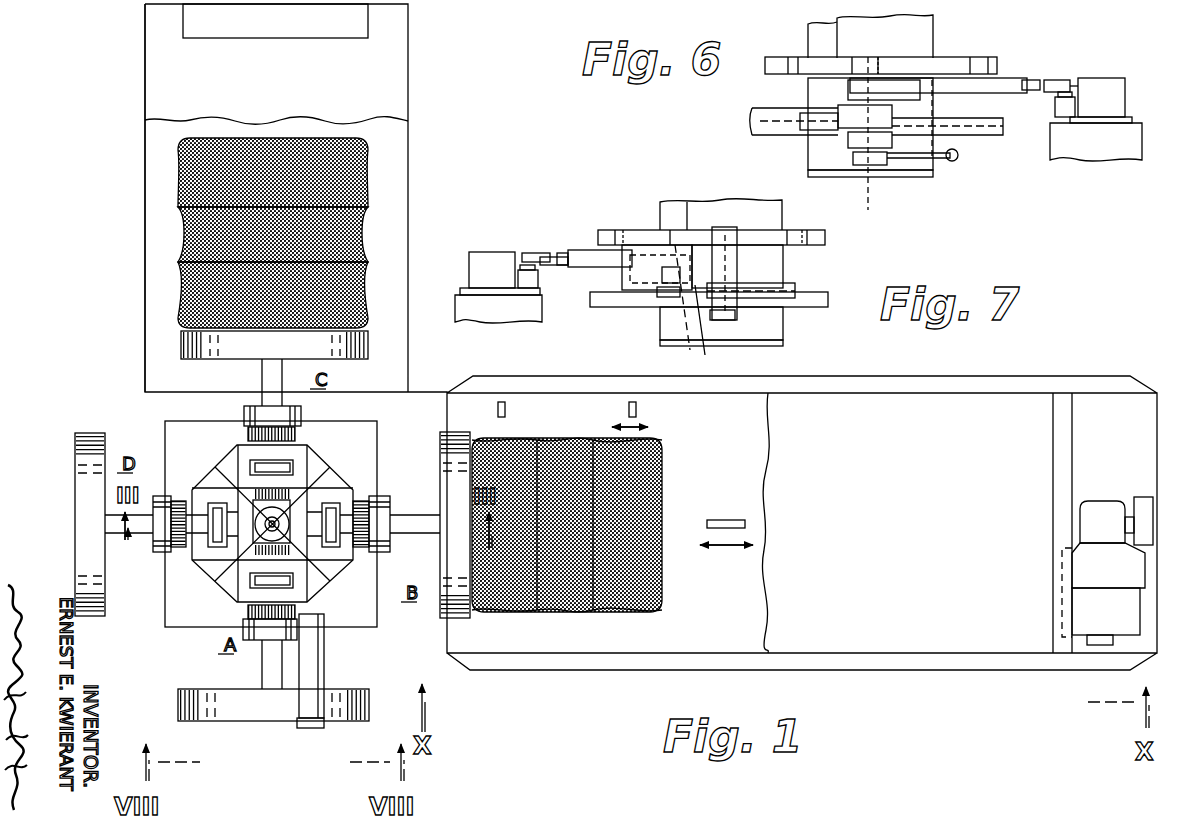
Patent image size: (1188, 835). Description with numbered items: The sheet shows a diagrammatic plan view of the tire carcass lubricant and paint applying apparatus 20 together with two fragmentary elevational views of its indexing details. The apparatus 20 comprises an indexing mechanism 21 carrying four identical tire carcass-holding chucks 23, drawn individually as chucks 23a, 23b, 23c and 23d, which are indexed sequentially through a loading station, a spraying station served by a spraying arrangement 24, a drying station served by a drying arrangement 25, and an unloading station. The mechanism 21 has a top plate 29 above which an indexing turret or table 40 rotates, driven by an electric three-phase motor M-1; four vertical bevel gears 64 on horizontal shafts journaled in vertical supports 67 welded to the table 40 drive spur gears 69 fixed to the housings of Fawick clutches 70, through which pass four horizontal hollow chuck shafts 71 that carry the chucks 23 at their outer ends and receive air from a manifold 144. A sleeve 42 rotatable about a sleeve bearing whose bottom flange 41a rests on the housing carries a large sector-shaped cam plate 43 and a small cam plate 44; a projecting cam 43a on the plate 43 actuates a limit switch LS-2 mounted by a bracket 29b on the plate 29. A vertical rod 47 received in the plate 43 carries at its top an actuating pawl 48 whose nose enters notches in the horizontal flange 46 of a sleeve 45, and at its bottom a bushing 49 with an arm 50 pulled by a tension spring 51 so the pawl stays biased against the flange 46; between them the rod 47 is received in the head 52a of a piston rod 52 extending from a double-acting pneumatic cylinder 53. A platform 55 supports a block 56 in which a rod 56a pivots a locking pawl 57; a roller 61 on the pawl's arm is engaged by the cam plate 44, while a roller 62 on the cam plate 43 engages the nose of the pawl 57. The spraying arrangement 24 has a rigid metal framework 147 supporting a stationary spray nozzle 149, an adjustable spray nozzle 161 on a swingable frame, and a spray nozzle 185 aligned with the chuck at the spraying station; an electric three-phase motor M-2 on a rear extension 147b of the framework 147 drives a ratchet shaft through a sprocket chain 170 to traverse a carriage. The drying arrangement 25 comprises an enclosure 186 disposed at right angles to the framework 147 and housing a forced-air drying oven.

In FIG. 1, the lubricant and paint applying apparatus 20 is at (540, 684).
In FIG. 1, the indexing mechanism 21 is at (163, 617).
In FIG. 1, the tire carcass-holding chucks 23 is at (178, 346).
In FIG. 1, the drive hub 23a is at (200, 702).
In FIG. 1, the drive hub 23b is at (462, 620).
In FIG. 1, the cylindrical article holder 23c is at (370, 347).
In FIG. 1, the drive hub 23d is at (90, 436).
In FIG. 1, the spraying arrangement 24 is at (579, 374).
In FIG. 1, the drying arrangement 25 is at (408, 139).
In FIG. 1, the top plate 29 is at (205, 622).
In FIG. 6, the bracket 29b is at (1100, 153).
In FIG. 7, the bracket 29b is at (497, 312).
In FIG. 1, the indexing turret or table 40 is at (218, 476).
In FIG. 6, the bottom flange 41a is at (808, 174).
In FIG. 7, the bottom flange 41a is at (768, 343).
In FIG. 6, the sleeve 42 is at (815, 144).
In FIG. 7, the sleeve 42 is at (775, 328).
In FIG. 6, the cam plate 43 is at (1007, 85).
In FIG. 7, the cam plate 43 is at (580, 255).
In FIG. 6, the projecting cam 43a is at (1040, 82).
In FIG. 7, the projecting cam 43a is at (560, 255).
In FIG. 7, the cam plate 44 is at (790, 292).
In FIG. 6, the sleeve 45 is at (818, 26).
In FIG. 7, the sleeve 45 is at (665, 205).
In FIG. 6, the horizontal flange 46 is at (830, 60).
In FIG. 7, the horizontal flange 46 is at (825, 240).
In FIG. 6, the vertical rod 47 is at (888, 208).
In FIG. 6, the actuating pawl 48 is at (937, 62).
In FIG. 6, the bushing 49 is at (853, 160).
In FIG. 6, the arm 50 is at (913, 160).
In FIG. 6, the tension spring 51 is at (958, 148).
In FIG. 6, the piston rod 52 is at (762, 110).
In FIG. 6, the head 52a is at (900, 112).
In FIG. 1, the double-acting pneumatic cylinder 53 is at (322, 667).
In FIG. 7, the horizontal bracket or platform 55 is at (597, 300).
In FIG. 7, the block 56 is at (702, 297).
In FIG. 7, the rod 56a is at (725, 280).
In FIG. 7, the locking pawl 57 is at (686, 235).
In FIG. 7, the roller 61 is at (673, 307).
In FIG. 6, the roller 62 is at (990, 60).
In FIG. 7, the roller 62 is at (600, 236).
In FIG. 1, the vertical bevel gears 64 is at (295, 556).
In FIG. 1, the vertical support 67 is at (255, 548).
In FIG. 1, the spur gears 69 is at (296, 433).
In FIG. 1, the Fawick clutches 70 is at (244, 416).
In FIG. 1, the horizontal hollow shafts 71 is at (262, 383).
In FIG. 1, the manifold 144 is at (262, 520).
In FIG. 1, the rigid metal framework 147 is at (800, 660).
In FIG. 1, the rear extension 147b is at (1100, 405).
In FIG. 1, the spray nozzle 149 is at (507, 406).
In FIG. 1, the spray nozzle 161 is at (638, 406).
In FIG. 1, the sprocket chain 170 is at (1147, 500).
In FIG. 1, the spray nozzle 185 is at (722, 522).
In FIG. 1, the enclosure 186 is at (145, 192).
In FIG. 6, the limit switch LS-2 is at (1097, 90).
In FIG. 7, the limit switch LS-2 is at (497, 255).
In FIG. 1, the electric three-phase motor M-1 is at (370, 530).
In FIG. 1, the electric three-phase motor M-2 is at (1082, 617).